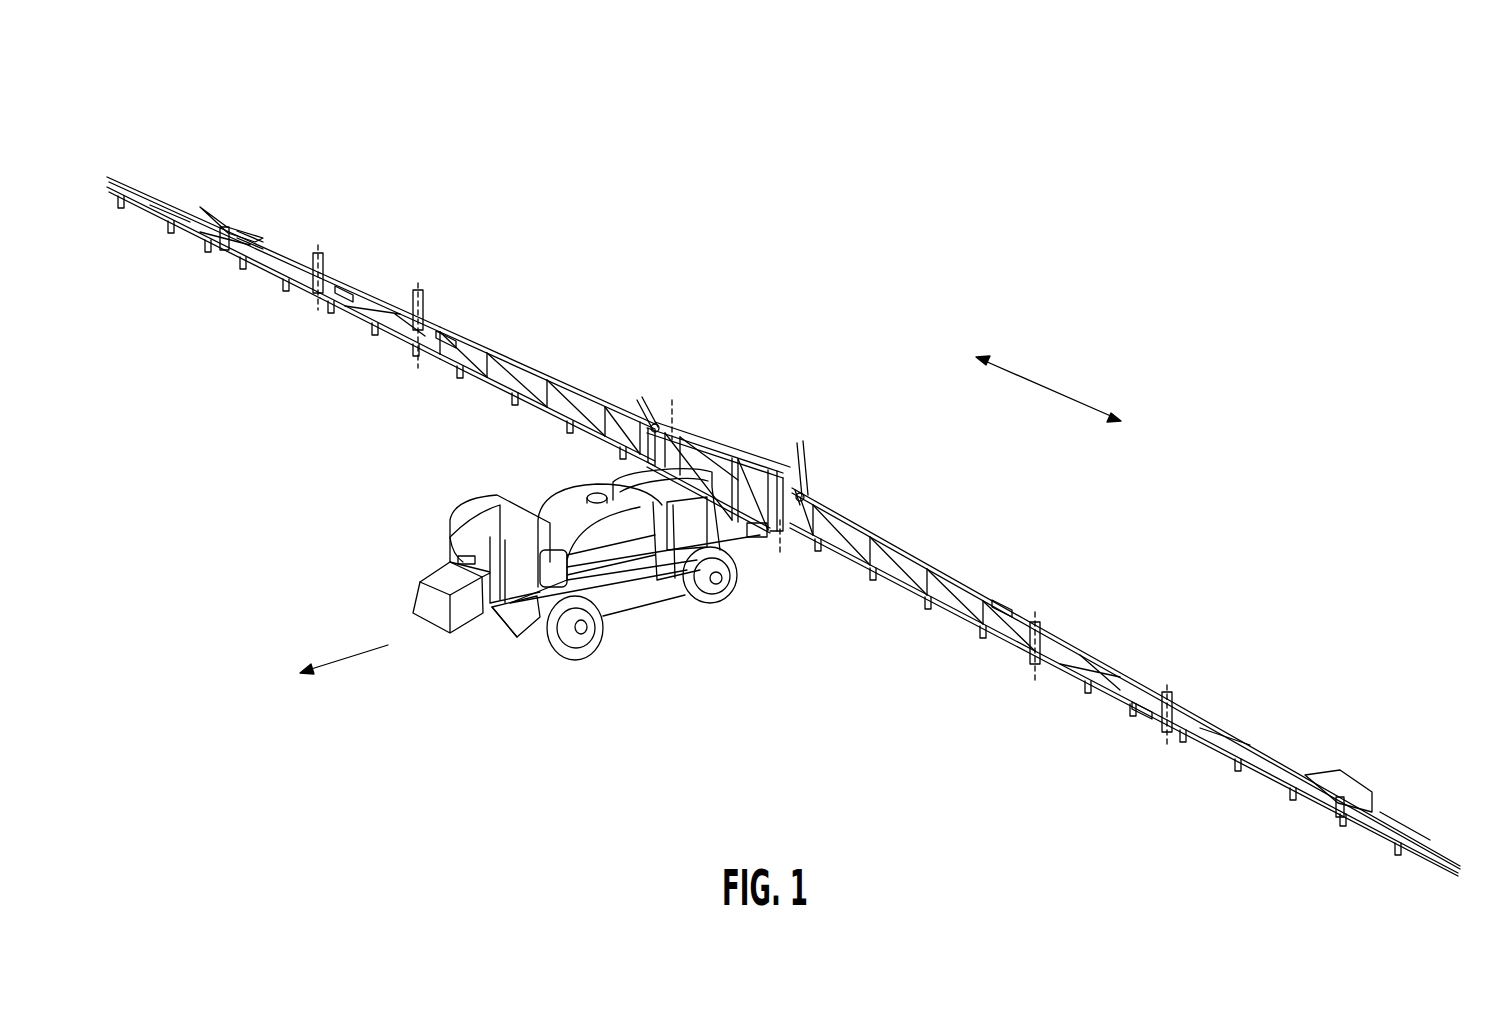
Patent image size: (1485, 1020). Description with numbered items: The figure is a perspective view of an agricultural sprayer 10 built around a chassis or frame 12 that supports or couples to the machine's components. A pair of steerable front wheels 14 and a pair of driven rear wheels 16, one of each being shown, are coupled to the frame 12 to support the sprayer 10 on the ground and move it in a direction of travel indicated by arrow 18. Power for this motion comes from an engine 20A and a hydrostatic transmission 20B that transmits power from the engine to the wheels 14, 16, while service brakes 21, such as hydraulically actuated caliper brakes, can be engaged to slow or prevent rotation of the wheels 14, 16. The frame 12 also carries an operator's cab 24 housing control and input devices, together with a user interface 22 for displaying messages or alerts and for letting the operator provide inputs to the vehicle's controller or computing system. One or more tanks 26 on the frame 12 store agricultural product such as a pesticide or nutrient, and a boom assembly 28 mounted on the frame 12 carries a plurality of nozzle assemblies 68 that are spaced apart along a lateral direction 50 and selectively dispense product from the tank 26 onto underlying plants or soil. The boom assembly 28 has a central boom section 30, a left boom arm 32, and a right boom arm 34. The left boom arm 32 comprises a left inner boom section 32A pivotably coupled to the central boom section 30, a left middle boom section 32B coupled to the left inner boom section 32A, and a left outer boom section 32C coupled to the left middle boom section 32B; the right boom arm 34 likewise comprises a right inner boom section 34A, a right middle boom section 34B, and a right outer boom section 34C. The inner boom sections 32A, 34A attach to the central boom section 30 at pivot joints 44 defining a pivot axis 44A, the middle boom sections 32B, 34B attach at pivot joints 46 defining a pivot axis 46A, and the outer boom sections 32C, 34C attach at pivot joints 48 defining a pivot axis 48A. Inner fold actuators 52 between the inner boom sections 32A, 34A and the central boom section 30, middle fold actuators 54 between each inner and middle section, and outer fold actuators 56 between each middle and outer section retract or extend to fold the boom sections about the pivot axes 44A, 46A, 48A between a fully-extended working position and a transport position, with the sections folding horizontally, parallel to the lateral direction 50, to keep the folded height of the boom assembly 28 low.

The agricultural sprayer 10 is at (203, 173).
The chassis or frame 12 is at (618, 597).
The steerable front wheels 14 is at (575, 660).
The driven rear wheels 16 is at (722, 604).
The direction of travel 18 is at (350, 658).
The engine 20A is at (658, 568).
The hydrostatic transmission 20B is at (727, 532).
The service brakes 21 is at (570, 633).
The user interface 22 is at (457, 553).
The operator's cab 24 is at (472, 517).
The tank 26 is at (560, 495).
The boom assembly 28 is at (857, 480).
The central boom section 30 is at (755, 450).
The left boom arm 32 is at (1144, 538).
The left inner boom section 32A is at (918, 542).
The left middle boom section 32B is at (1133, 670).
The left outer boom section 32C is at (1250, 735).
The right boom arm 34 is at (590, 270).
The right inner boom section 34A is at (512, 350).
The right middle boom section 34B is at (366, 280).
The right outer boom section 34C is at (322, 262).
The pivot joints 44 is at (700, 430).
The pivot axis 44A is at (672, 418).
The pivot joints 46 is at (1040, 620).
The pivot axis 46A is at (414, 360).
The pivot joints 48 is at (323, 266).
The pivot axis 48A is at (312, 304).
The lateral direction 50 is at (1052, 389).
The inner fold actuators 52 is at (658, 424).
The middle fold actuators 54 is at (450, 338).
The outer fold actuators 56 is at (346, 312).
The nozzle assemblies 68 is at (455, 390).